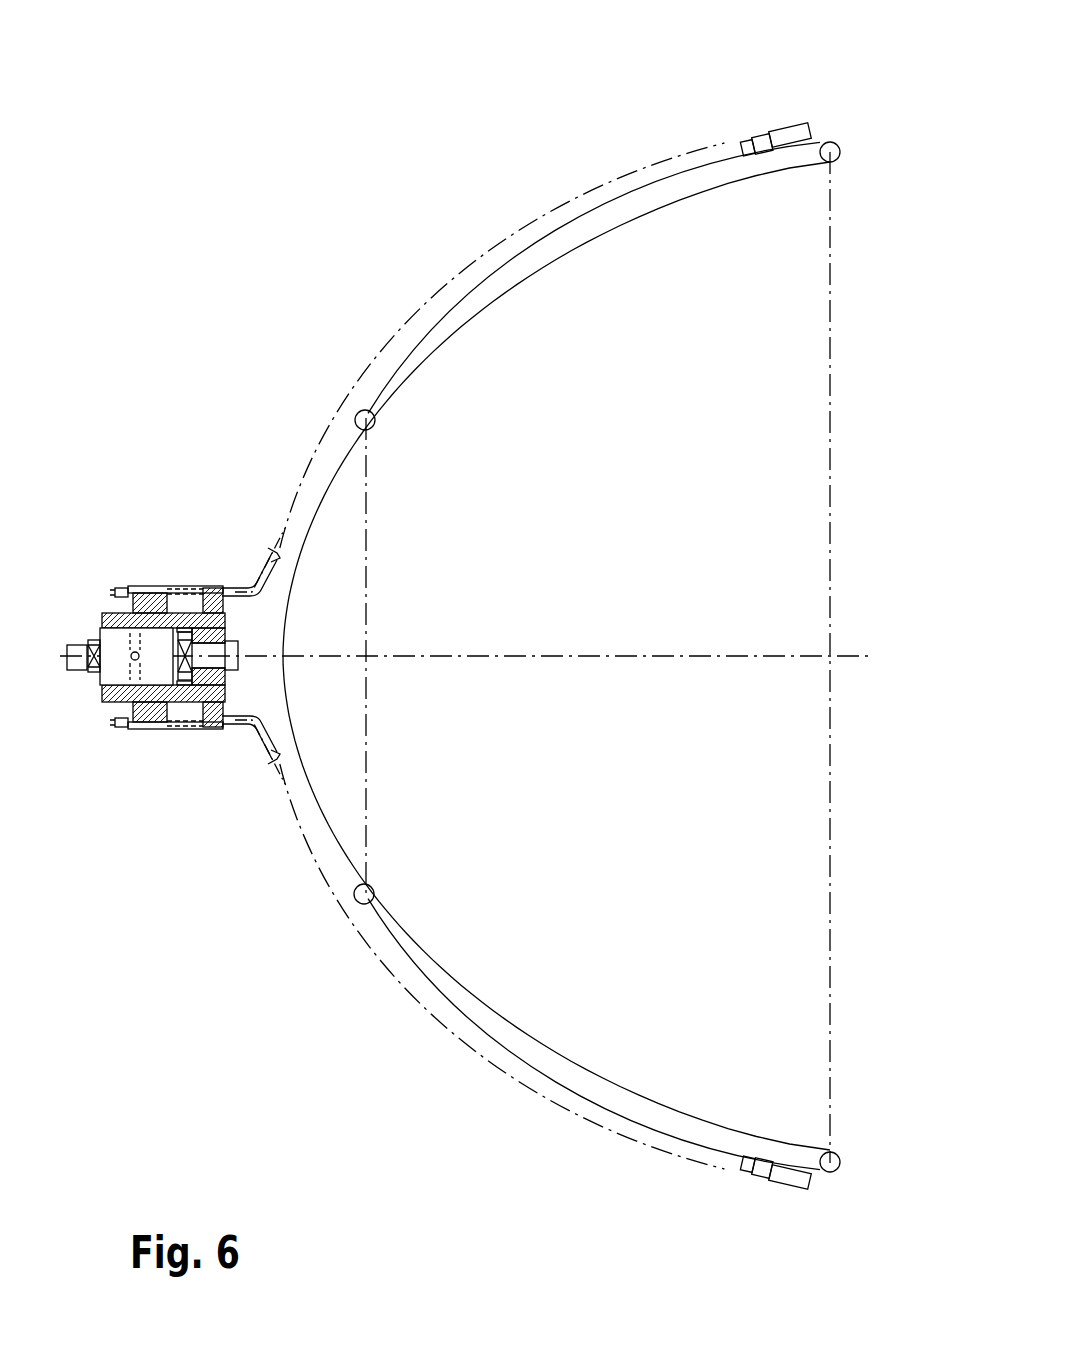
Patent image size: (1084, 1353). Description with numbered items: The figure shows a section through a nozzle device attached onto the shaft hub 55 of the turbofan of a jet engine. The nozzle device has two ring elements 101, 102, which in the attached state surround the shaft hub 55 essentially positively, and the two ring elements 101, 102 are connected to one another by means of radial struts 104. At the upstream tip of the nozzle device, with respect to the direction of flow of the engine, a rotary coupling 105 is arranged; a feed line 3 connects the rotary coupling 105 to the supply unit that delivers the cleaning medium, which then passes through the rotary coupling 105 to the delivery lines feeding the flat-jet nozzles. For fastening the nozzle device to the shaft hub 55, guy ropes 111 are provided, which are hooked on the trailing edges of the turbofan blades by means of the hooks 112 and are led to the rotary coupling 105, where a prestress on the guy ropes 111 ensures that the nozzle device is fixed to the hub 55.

The feed line 3 is at (70, 672).
The shaft hub 55 is at (790, 905).
The ring element 101 is at (840, 1172).
The ring element 102 is at (355, 900).
The radial struts 104 is at (603, 220).
The rotary coupling 105 is at (147, 566).
The guy ropes 111 is at (483, 250).
The hooks 112 is at (790, 130).